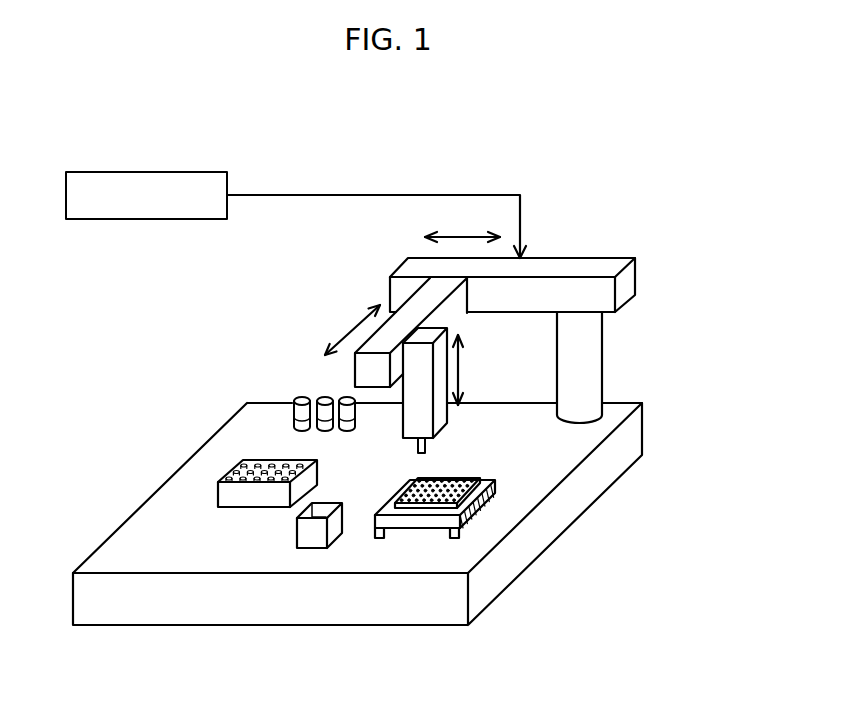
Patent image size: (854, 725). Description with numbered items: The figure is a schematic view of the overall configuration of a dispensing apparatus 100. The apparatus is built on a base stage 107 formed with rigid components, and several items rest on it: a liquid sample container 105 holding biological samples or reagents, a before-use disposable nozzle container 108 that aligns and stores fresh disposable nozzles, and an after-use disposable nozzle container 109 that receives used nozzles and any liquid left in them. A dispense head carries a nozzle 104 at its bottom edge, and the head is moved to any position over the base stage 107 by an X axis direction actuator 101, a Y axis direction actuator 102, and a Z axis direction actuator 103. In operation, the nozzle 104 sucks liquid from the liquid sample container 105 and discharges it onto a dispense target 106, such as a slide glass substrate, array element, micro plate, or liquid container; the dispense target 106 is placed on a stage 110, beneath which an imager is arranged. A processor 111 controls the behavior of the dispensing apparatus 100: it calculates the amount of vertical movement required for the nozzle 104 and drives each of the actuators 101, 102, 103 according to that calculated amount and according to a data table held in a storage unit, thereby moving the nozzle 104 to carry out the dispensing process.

The dispensing apparatus 100 is at (470, 298).
The X axis direction actuator 101 is at (605, 293).
The Y axis direction actuator 102 is at (423, 303).
The Z axis direction actuator 103 is at (438, 378).
The nozzle 104 is at (433, 441).
The liquid sample container 105 is at (346, 396).
The dispense target 106 is at (470, 497).
The base stage 107 is at (605, 493).
The before-use disposable nozzle container 108 is at (230, 495).
The after-use disposable nozzle container 109 is at (342, 533).
The stage 110 is at (418, 528).
The processor 111 is at (147, 172).